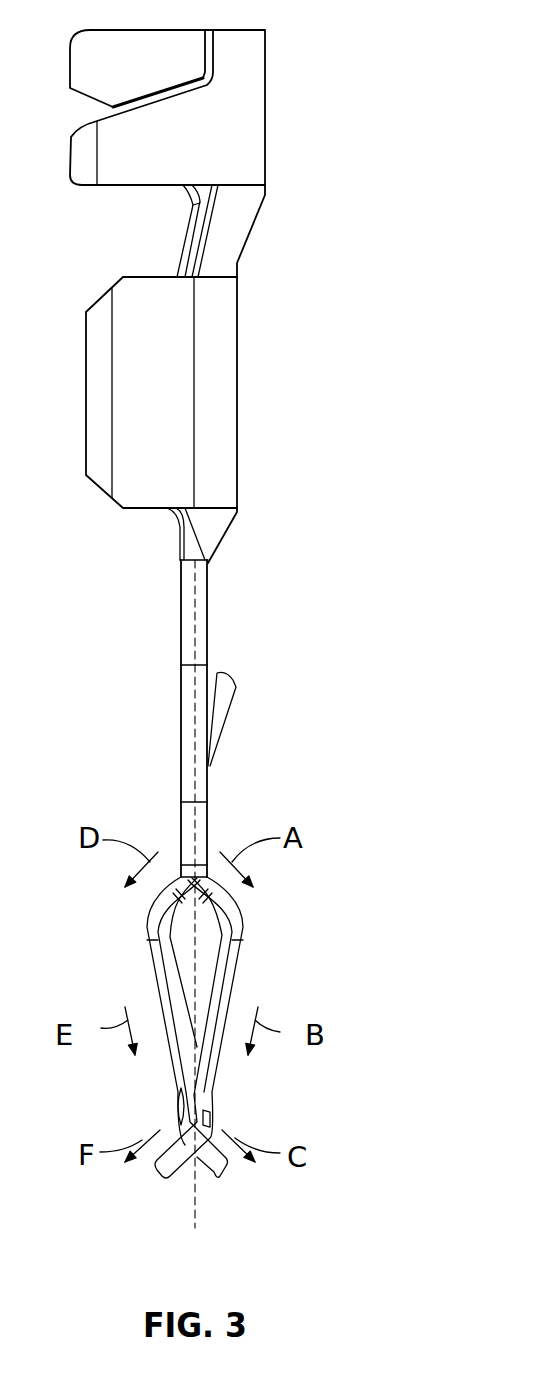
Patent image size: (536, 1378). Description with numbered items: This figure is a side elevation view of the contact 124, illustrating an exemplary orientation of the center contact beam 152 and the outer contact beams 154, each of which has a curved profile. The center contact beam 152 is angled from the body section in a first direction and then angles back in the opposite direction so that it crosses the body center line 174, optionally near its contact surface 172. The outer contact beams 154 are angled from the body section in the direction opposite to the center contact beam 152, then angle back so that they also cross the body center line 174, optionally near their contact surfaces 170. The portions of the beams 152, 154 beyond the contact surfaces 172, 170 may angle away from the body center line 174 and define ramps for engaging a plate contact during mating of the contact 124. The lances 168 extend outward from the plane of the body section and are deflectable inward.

The contact 124 is at (188, 607).
The lance 168 is at (222, 698).
The body center line 174 is at (197, 787).
The center contact beam 152 is at (230, 968).
The outer contact beam 154 is at (156, 963).
The contact surface 170 is at (208, 1112).
The contact surface 172 is at (174, 1092).